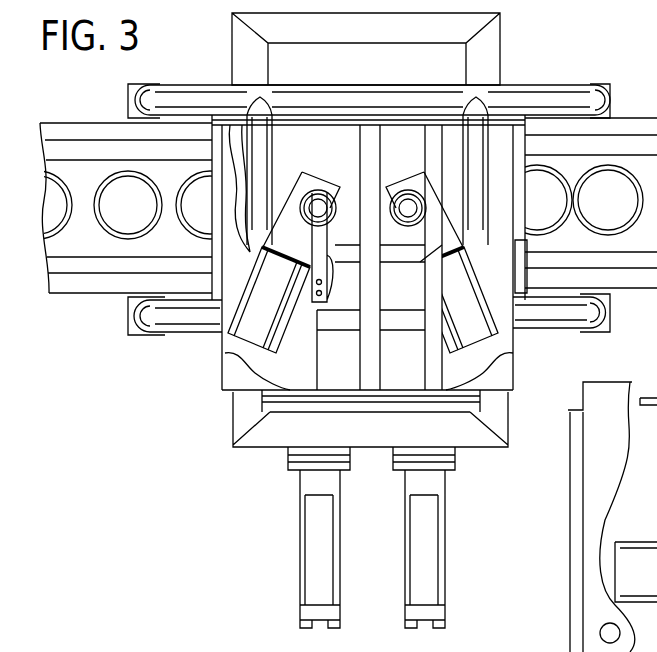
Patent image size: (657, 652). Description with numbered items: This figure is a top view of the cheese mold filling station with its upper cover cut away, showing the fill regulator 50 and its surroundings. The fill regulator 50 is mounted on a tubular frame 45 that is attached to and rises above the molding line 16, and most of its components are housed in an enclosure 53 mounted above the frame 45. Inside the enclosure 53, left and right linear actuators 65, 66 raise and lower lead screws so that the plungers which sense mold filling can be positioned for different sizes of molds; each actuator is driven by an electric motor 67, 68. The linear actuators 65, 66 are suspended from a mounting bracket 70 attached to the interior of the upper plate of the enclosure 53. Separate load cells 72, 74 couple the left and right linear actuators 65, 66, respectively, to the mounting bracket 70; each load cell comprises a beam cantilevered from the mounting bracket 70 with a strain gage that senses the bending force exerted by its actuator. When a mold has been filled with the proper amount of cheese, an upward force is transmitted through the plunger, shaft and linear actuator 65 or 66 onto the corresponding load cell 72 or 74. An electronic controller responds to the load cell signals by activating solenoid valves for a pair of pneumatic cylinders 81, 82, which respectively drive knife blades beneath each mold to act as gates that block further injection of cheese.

The molding line 16 is at (83, 283).
The tubular frame 45 is at (197, 98).
The fill regulator 50 is at (336, 272).
The enclosure 53 is at (232, 392).
The left linear actuator 65 is at (317, 183).
The right linear actuator 66 is at (393, 190).
The electric motor 67 is at (269, 300).
The electric motor 68 is at (457, 300).
The mounting bracket 70 is at (337, 323).
The load cell 72 is at (320, 243).
The load cell 74 is at (430, 240).
The pneumatic cylinder 81 is at (315, 542).
The pneumatic cylinder 82 is at (430, 548).